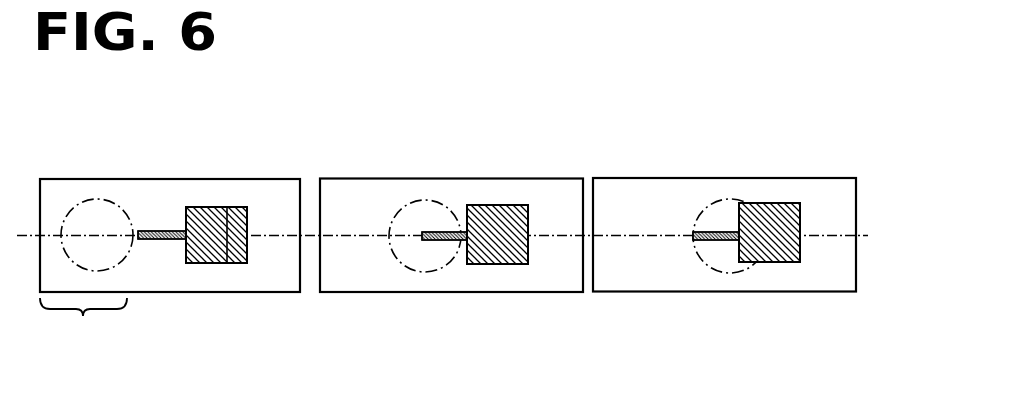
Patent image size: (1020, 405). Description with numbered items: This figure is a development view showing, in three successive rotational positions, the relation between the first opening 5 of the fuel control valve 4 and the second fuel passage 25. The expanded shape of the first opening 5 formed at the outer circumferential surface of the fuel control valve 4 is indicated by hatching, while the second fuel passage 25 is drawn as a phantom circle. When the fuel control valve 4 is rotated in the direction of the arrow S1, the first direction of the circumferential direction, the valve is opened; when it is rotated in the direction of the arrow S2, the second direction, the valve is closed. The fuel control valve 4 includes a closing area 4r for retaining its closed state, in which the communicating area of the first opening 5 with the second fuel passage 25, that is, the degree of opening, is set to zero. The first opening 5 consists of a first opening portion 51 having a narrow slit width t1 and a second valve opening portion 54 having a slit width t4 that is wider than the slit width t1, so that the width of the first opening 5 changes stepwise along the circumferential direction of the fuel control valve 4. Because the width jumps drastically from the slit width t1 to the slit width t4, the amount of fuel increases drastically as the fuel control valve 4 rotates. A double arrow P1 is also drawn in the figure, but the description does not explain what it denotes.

The fuel control valve 4 is at (856, 255).
The closing area 4r is at (83, 323).
The second fuel passage 25 is at (87, 202).
The first opening 5 is at (247, 242).
The first opening portion 51 is at (166, 240).
The second valve opening portion 54 is at (240, 265).
The slit width t1 is at (150, 239).
The slit width t4 is at (227, 264).
The pitch direction P1 is at (122, 140).
The arrow S1 is at (235, 153).
The arrow S2 is at (272, 153).